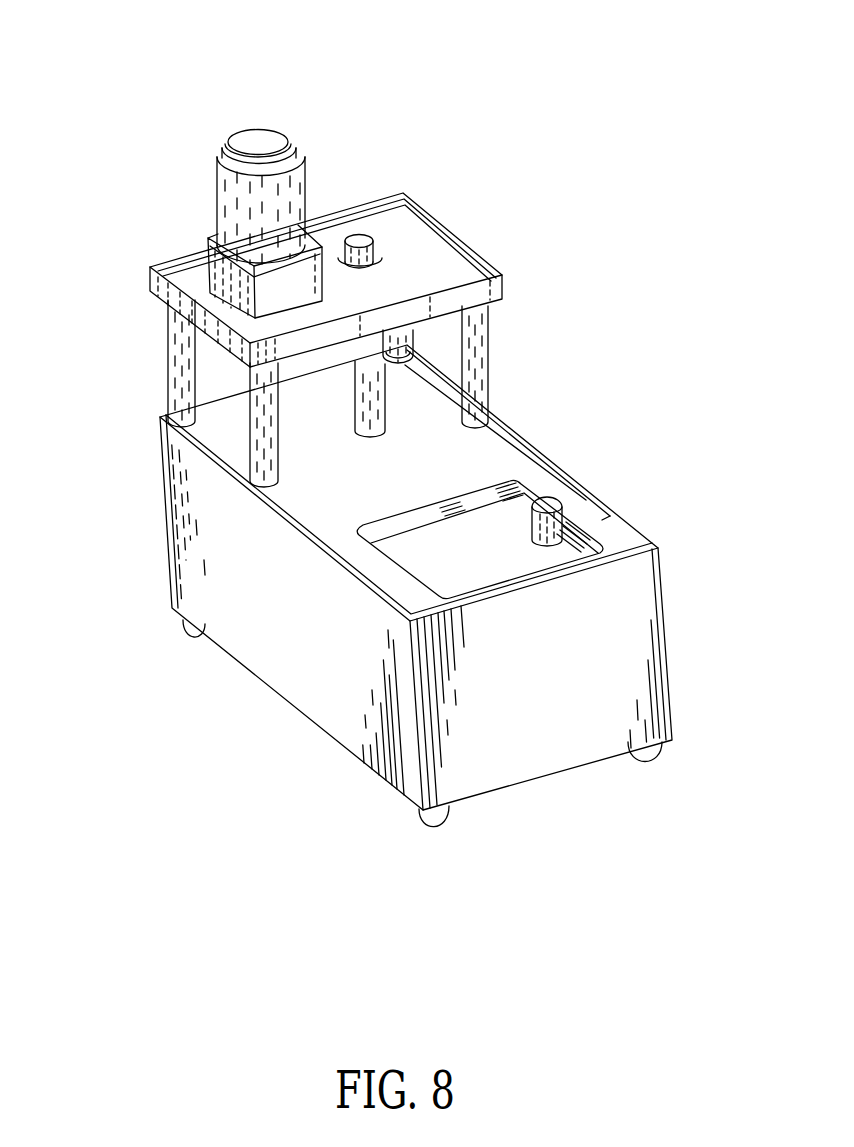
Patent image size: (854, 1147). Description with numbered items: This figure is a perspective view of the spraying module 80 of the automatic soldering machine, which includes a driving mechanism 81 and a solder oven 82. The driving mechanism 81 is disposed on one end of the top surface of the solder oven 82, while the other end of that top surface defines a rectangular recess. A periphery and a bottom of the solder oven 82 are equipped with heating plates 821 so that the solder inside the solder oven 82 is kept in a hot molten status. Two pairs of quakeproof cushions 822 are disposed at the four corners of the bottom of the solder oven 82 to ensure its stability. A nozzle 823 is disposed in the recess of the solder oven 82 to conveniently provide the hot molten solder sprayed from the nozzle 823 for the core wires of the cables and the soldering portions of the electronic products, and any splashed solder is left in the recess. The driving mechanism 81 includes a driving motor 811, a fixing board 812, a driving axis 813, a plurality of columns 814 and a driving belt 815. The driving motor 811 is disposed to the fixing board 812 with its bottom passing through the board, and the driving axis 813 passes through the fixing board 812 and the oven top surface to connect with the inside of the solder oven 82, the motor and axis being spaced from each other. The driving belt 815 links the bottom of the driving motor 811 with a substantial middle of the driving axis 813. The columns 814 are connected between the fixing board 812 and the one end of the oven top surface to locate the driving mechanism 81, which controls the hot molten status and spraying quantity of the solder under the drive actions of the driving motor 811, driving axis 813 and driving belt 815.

The spraying module 80 is at (108, 51).
The driving mechanism 81 is at (335, 193).
The driving motor 811 is at (218, 201).
The fixing board 812 is at (205, 323).
The driving axis 813 is at (371, 238).
The columns 814 is at (490, 396).
The driving belt 815 is at (455, 331).
The solder oven 82 is at (160, 523).
The heating plates 821 is at (308, 635).
The quakeproof cushions 822 is at (428, 829).
The nozzle 823 is at (568, 515).